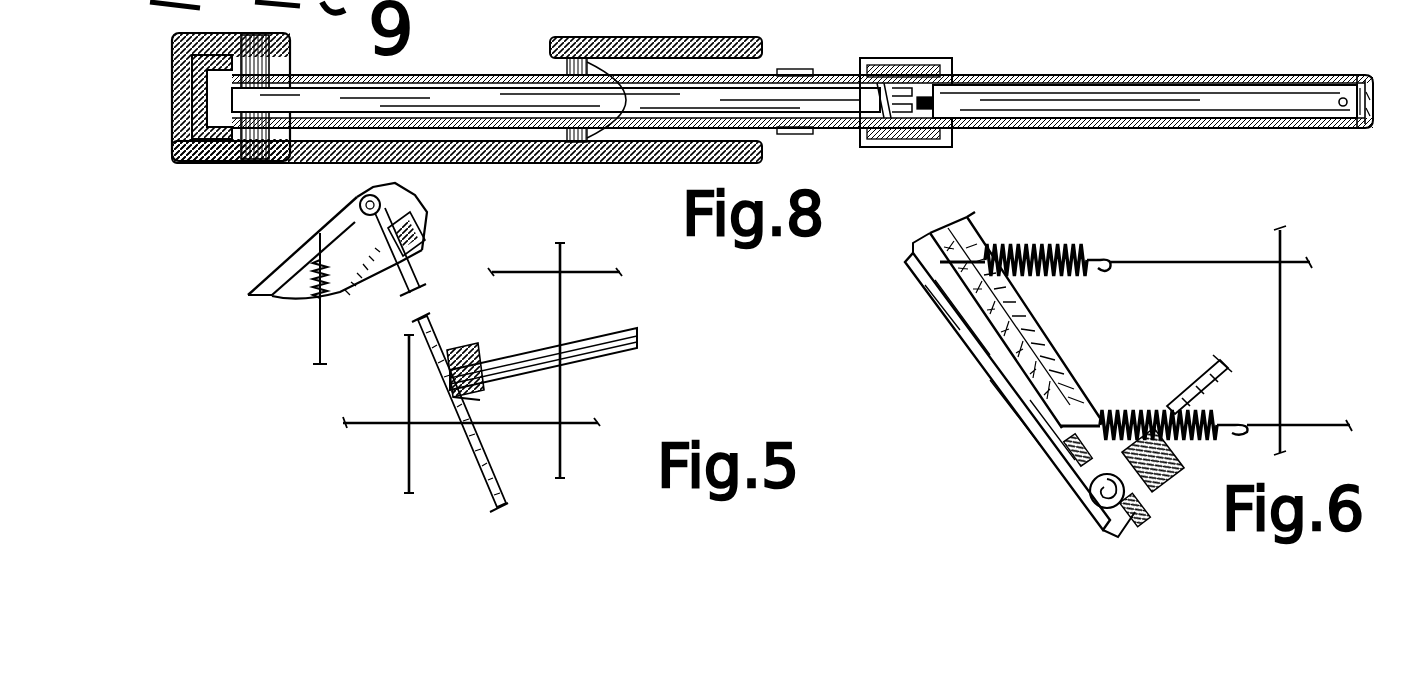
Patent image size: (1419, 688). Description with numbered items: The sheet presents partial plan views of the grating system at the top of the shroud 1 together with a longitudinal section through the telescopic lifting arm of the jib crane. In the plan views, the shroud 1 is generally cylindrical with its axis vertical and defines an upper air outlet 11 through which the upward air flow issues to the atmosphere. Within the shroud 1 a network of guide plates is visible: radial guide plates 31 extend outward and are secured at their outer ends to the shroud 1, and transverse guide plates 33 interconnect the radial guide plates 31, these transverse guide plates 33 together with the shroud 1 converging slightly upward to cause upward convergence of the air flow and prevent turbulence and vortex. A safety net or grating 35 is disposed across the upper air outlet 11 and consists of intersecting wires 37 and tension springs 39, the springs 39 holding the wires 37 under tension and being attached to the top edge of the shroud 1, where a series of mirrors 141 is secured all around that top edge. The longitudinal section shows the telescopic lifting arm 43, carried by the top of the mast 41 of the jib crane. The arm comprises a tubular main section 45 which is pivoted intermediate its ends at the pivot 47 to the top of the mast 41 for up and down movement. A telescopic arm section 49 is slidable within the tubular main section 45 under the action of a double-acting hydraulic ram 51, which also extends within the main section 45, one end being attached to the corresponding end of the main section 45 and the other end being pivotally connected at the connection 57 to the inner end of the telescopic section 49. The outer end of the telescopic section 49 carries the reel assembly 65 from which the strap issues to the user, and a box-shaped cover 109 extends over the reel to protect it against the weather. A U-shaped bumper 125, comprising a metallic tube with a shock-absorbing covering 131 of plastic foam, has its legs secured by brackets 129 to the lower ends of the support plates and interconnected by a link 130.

In FIG. 5, the shroud 1 is at (276, 262).
In FIG. 6, the shroud 1 is at (930, 300).
In FIG. 5, the upper air outlet 11 is at (357, 293).
In FIG. 6, the upper air outlet 11 is at (1067, 357).
In FIG. 5, the radial guide plates 31 is at (433, 340).
In FIG. 6, the radial guide plates 31 is at (1200, 376).
In FIG. 5, the transverse guide plates 33 is at (522, 350).
In FIG. 5, the safety net or grating 35 is at (595, 447).
In FIG. 6, the safety net or grating 35 is at (1285, 385).
In FIG. 5, the wires 37 is at (573, 423).
In FIG. 6, the wires 37 is at (1275, 277).
In FIG. 5, the tension springs 39 is at (310, 292).
In FIG. 6, the tension springs 39 is at (1048, 275).
In FIG. 8, the mast 41 is at (870, 60).
In FIG. 8, the telescopic lifting arm 43 is at (1162, 73).
In FIG. 8, the main section 45 is at (513, 80).
In FIG. 8, the pivot 47 is at (903, 63).
In FIG. 8, the telescopic arm section 49 is at (455, 98).
In FIG. 8, the double-acting hydraulic ram 51 is at (983, 98).
In FIG. 8, the pivotal connection 57 is at (917, 60).
In FIG. 8, the reel assembly 65 is at (168, 140).
In FIG. 8, the box-shaped cover 109 is at (210, 150).
In FIG. 8, the U-shaped bumper 125 is at (620, 164).
In FIG. 8, the brackets 129 is at (280, 160).
In FIG. 8, the link 130 is at (590, 70).
In FIG. 8, the covering 131 is at (678, 45).
In FIG. 6, the mirrors 141 is at (1090, 493).